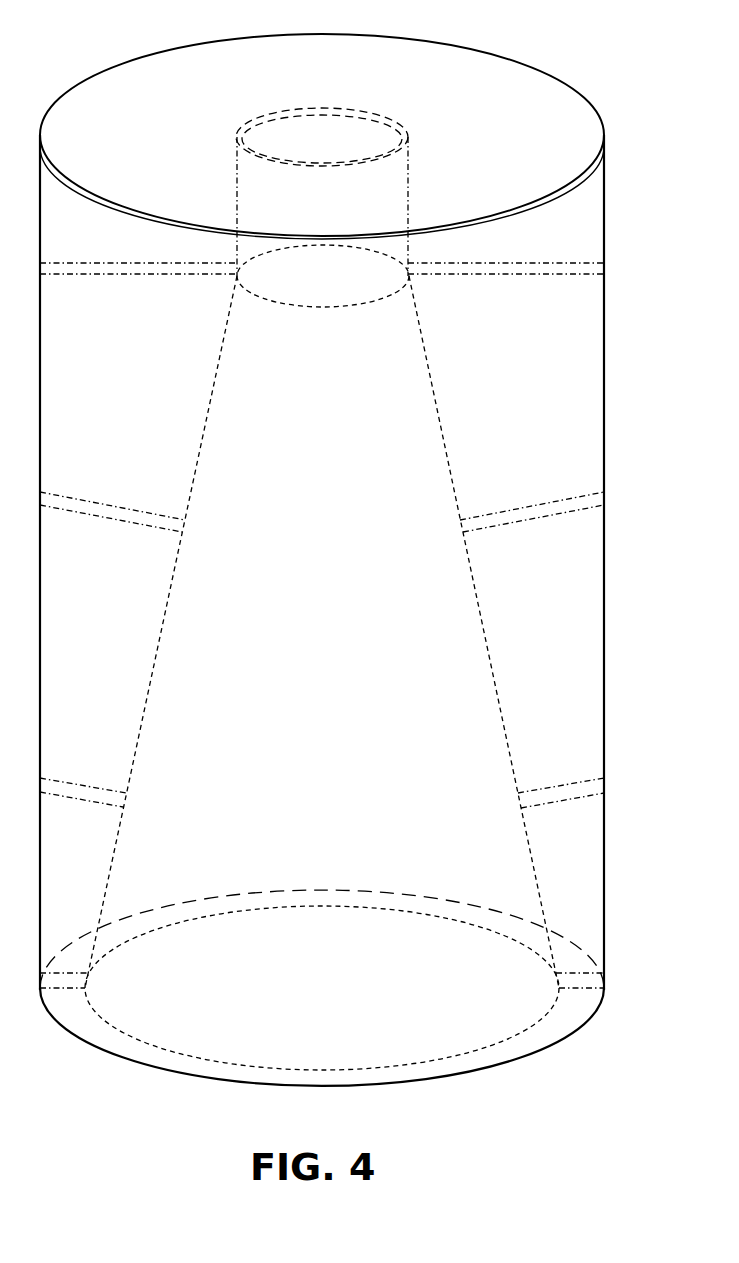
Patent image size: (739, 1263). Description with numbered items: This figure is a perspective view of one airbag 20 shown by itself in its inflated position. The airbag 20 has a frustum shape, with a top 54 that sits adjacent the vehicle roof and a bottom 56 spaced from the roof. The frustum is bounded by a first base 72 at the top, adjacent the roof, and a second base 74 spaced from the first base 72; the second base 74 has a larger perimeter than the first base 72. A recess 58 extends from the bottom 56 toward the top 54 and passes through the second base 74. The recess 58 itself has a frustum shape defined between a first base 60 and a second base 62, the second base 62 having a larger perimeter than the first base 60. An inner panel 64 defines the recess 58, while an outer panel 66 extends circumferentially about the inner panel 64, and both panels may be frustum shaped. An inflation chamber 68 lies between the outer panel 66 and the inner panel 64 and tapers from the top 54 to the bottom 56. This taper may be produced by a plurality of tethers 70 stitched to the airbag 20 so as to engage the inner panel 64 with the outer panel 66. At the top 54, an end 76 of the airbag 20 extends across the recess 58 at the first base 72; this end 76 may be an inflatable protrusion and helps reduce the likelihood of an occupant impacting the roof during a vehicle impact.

The airbag 20 is at (374, 572).
The top 54 is at (364, 129).
The bottom 56 is at (348, 1008).
The recess 58 is at (325, 657).
The first base of the recess 60 is at (320, 308).
The second base of the recess 62 is at (347, 903).
The inner panel 64 is at (497, 660).
The outer panel 66 is at (605, 712).
The inflation chamber 68 is at (550, 372).
The tethers 70 is at (77, 262).
The first base 72 is at (125, 103).
The second base 74 is at (128, 1060).
The end 76 is at (258, 190).